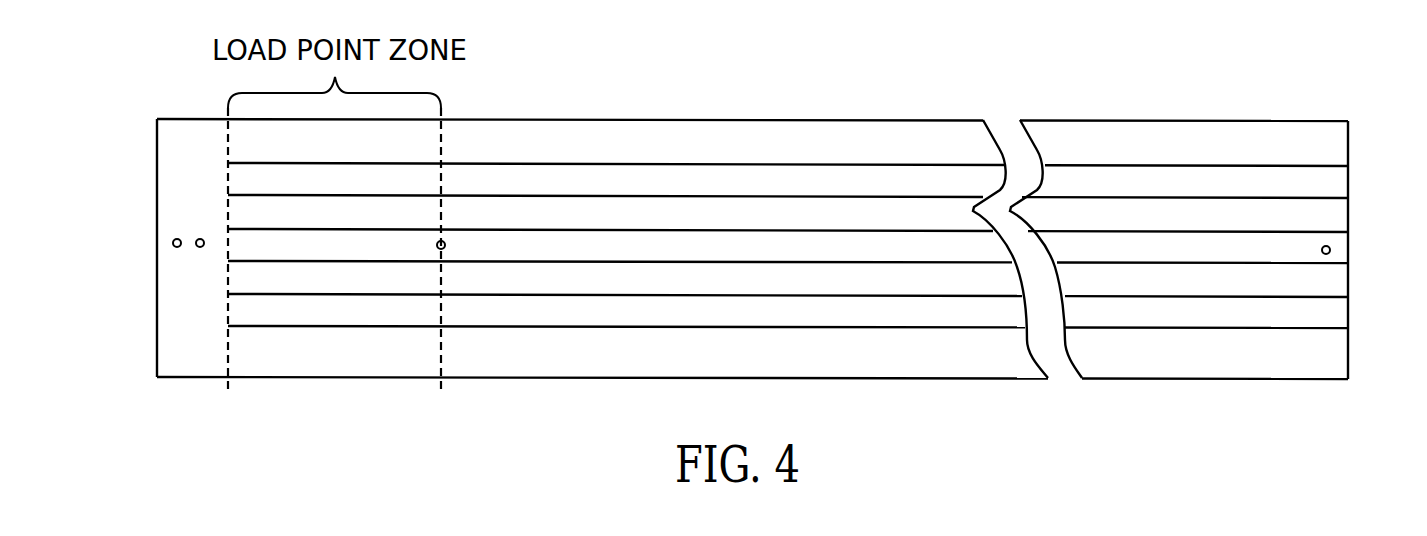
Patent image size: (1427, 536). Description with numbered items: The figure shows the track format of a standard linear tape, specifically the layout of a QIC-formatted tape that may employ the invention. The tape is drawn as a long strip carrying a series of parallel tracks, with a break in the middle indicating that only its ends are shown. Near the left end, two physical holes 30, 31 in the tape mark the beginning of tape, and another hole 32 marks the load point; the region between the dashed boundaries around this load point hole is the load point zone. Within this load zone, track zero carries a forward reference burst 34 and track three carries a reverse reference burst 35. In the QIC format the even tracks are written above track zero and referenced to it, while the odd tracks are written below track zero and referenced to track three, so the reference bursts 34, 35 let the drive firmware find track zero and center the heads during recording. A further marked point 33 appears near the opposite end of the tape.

The physical hole 30 is at (174, 239).
The physical hole 31 is at (198, 247).
The hole 32 is at (445, 245).
The end-of-tape point 33 is at (1330, 250).
The forward reference burst 34 is at (392, 242).
The reverse reference burst 35 is at (392, 274).